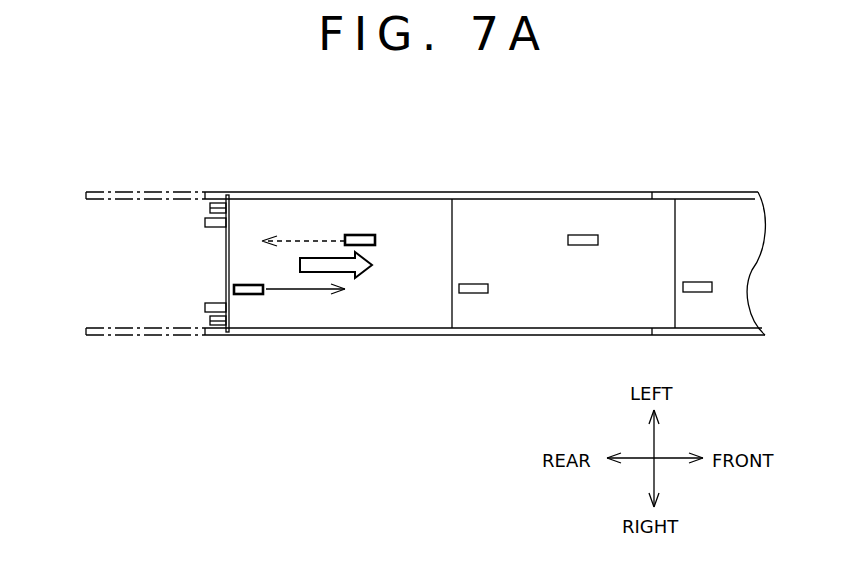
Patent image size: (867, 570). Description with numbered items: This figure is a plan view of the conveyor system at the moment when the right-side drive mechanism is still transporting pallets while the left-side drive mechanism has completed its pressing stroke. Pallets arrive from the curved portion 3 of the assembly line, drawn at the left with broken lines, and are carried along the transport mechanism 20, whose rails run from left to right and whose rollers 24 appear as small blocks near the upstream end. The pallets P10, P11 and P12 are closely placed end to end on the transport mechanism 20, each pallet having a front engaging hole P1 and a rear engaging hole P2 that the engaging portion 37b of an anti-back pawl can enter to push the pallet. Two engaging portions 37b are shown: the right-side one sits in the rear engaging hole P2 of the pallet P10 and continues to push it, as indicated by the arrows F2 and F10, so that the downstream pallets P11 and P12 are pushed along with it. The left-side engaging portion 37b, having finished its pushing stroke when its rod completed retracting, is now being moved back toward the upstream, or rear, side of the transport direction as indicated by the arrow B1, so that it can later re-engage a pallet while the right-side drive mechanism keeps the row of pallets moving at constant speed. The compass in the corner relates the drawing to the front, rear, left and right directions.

The curved portion 3 is at (102, 192).
The transport mechanism 20 is at (674, 190).
The roller 24 is at (210, 209).
The engaging portion 37b is at (352, 235).
The arrow B1 is at (308, 241).
The front engaging hole P1 is at (375, 240).
The rear engaging hole P2 is at (240, 294).
The pallet P10 is at (224, 276).
The pallet P11 is at (527, 192).
The pallet P12 is at (737, 190).
The arrow F2 is at (275, 290).
The arrow F10 is at (349, 278).